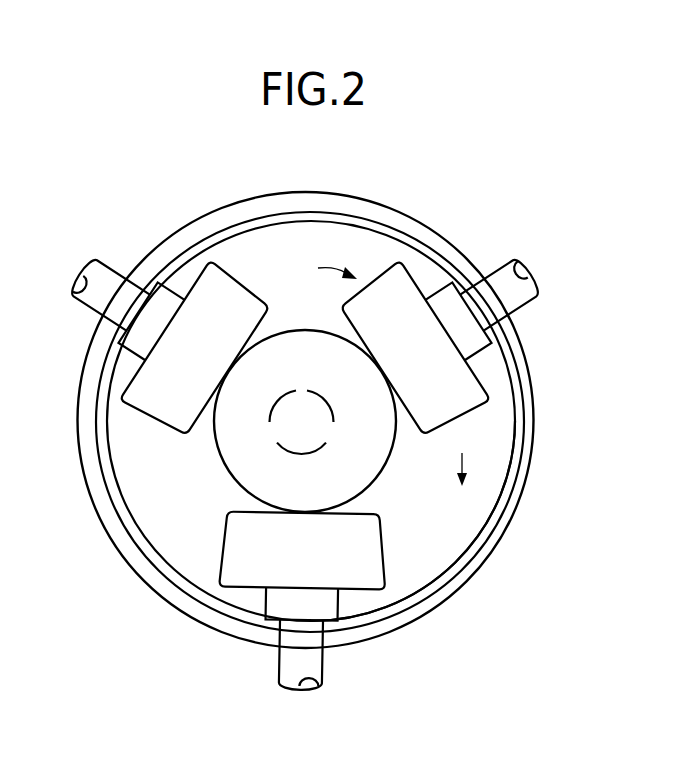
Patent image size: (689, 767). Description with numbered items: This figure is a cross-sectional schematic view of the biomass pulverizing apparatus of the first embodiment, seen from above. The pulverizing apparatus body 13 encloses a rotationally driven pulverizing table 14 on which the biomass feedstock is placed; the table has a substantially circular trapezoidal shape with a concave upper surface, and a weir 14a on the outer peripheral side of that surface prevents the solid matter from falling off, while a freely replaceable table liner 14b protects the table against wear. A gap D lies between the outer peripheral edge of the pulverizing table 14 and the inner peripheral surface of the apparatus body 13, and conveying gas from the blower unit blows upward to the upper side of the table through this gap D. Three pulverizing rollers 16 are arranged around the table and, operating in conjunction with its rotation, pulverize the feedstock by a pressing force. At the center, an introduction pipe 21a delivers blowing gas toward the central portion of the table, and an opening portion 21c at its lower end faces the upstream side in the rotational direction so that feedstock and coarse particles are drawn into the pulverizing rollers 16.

The pulverizing apparatus body 13 is at (522, 343).
The gap D is at (516, 456).
The pulverizing table 14 is at (342, 463).
The weir 14a is at (363, 617).
The table liner 14b is at (452, 502).
The pulverizing rollers 16 is at (410, 323).
The introduction pipe 21a is at (283, 445).
The opening portion 21c is at (327, 432).